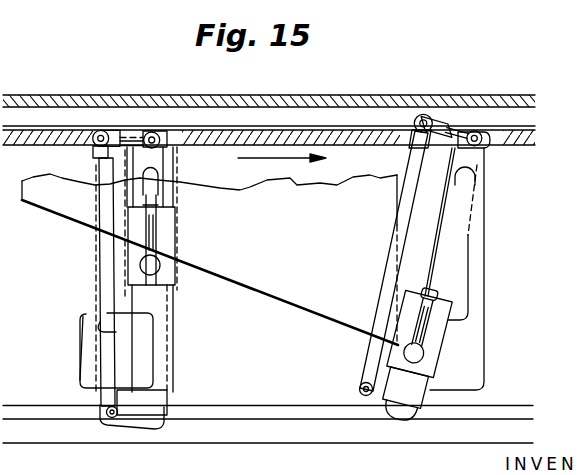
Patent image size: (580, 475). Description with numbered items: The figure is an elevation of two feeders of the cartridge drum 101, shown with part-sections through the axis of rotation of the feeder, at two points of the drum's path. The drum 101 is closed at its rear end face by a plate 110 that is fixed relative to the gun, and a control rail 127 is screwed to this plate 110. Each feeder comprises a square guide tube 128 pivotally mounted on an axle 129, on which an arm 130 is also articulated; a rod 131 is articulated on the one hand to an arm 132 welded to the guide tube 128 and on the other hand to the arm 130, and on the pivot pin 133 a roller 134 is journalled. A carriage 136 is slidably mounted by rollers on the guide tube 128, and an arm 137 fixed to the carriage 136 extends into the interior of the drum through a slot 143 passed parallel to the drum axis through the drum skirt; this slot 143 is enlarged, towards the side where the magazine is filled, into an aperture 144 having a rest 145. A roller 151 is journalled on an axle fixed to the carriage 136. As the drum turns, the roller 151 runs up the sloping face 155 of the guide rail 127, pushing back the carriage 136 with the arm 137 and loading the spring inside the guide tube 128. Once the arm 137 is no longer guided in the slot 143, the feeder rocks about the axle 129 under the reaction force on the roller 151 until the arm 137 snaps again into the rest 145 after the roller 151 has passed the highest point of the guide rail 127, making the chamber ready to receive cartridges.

The drum 101 is at (225, 147).
The plate 110 is at (318, 97).
The control rail 127 is at (218, 262).
The square guide tube 128 is at (464, 256).
The axle 129 is at (157, 130).
The arm 130 is at (128, 135).
The rod 131 is at (97, 248).
The arm 132 is at (137, 428).
The pivot pin 133 is at (103, 130).
The roller 134 is at (97, 131).
The carriage 136 is at (173, 288).
The arm 137 is at (143, 249).
The slot 143 is at (107, 313).
The aperture 144 is at (90, 354).
The rest 145 is at (100, 322).
The roller 151 is at (139, 270).
The sloping face 155 is at (279, 302).